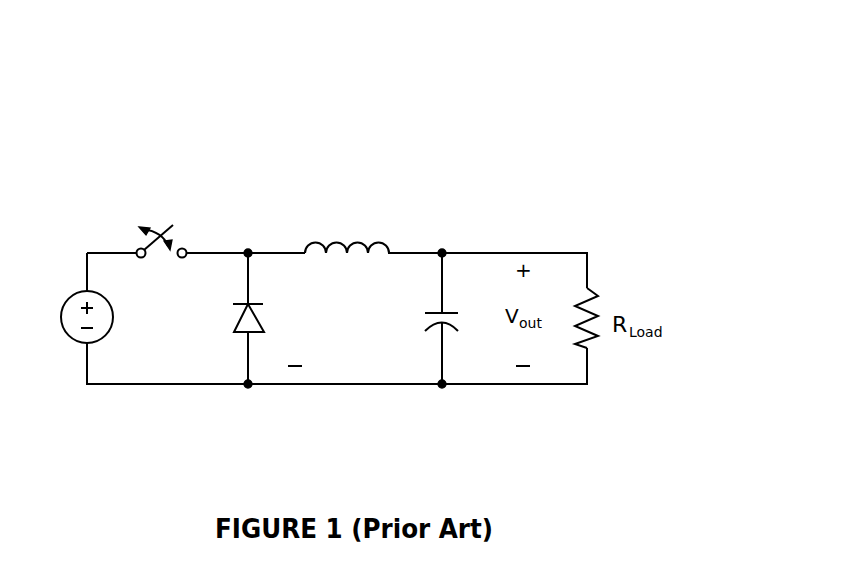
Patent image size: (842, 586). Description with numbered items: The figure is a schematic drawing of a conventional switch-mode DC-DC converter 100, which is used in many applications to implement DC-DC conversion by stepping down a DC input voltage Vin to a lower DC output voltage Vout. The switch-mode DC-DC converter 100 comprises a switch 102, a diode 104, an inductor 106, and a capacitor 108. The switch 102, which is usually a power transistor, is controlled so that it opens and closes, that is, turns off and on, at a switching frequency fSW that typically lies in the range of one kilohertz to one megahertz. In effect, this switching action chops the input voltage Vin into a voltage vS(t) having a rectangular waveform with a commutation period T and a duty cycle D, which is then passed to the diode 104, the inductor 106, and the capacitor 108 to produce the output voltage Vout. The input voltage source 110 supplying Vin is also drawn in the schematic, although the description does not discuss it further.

The switch-mode DC-DC converter 100 is at (603, 119).
The switch 102 is at (170, 207).
The diode 104 is at (232, 320).
The inductor 106 is at (350, 230).
The capacitor 108 is at (417, 322).
The input voltage source 110 is at (68, 292).